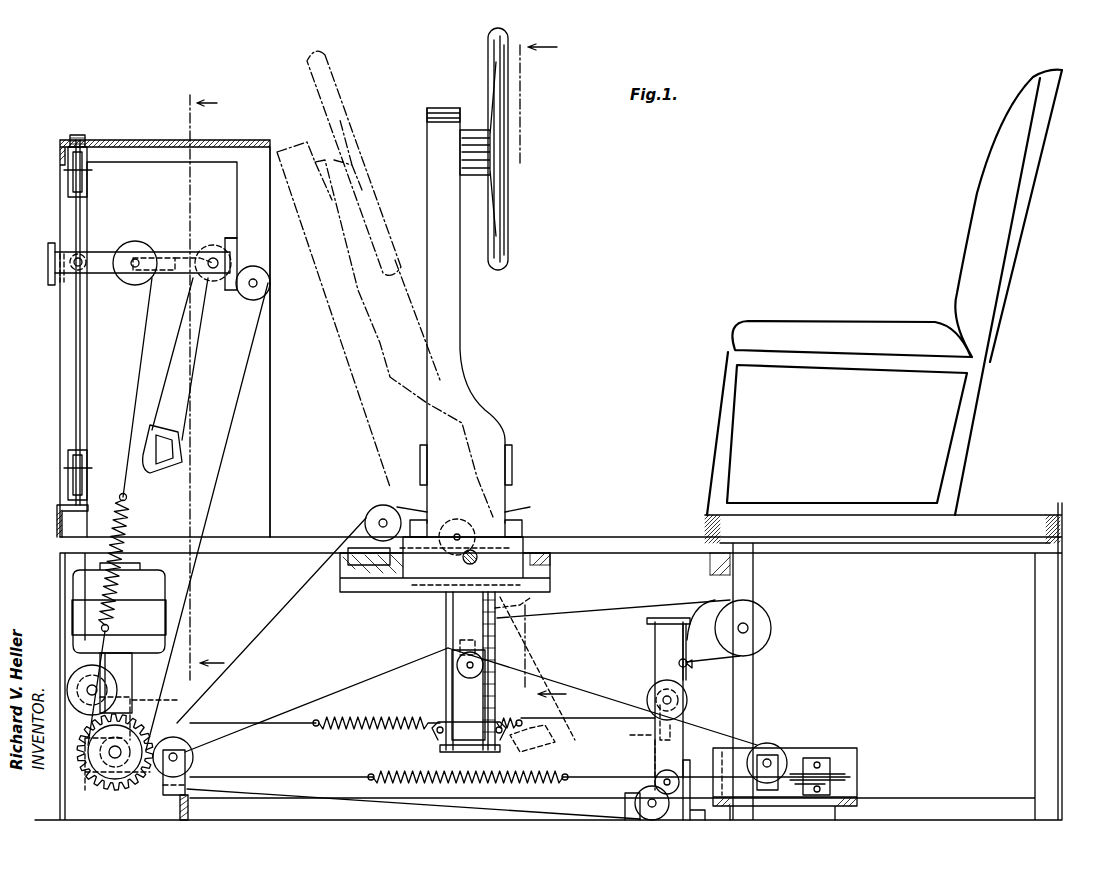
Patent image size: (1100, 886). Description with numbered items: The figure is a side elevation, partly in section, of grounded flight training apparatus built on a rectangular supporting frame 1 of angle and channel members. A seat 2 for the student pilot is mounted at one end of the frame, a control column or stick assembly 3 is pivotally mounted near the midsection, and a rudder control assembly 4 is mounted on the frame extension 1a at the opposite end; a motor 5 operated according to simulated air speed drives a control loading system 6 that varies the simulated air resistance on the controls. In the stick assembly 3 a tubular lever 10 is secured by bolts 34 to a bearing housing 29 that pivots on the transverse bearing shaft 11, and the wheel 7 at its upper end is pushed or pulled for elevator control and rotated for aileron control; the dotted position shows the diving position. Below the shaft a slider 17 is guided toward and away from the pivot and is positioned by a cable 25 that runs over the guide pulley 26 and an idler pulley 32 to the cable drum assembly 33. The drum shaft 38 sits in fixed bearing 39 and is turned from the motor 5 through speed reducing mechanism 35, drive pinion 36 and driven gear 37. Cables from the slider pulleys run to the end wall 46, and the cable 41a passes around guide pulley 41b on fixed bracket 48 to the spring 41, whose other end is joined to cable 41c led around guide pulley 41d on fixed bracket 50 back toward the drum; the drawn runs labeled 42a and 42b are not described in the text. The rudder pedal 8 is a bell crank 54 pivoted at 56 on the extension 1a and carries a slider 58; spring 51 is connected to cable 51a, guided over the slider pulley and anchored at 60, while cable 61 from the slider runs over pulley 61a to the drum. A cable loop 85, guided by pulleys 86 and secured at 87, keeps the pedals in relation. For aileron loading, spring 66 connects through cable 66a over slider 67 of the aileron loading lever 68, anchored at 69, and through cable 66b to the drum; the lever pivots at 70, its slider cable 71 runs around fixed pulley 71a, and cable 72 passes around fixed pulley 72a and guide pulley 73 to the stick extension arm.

The supporting frame 1 is at (60, 565).
The frame extension 1a is at (266, 395).
The seat 2 is at (1008, 322).
The control column or stick assembly 3 is at (348, 405).
The rudder control assembly 4 is at (117, 336).
The motor 5 is at (119, 608).
The control loading system 6 is at (230, 757).
The wheel 7 is at (338, 92).
The pedal 8 is at (165, 474).
The lever 10 is at (427, 157).
The transverse axis bearing shaft 11 is at (478, 555).
The shiftable structure or slider 17 is at (452, 680).
The cable 25 is at (276, 626).
The guide pulley 26 is at (456, 519).
The bearing housing 29 is at (398, 592).
The idler pulley 32 is at (372, 512).
The cable drum assembly 33 is at (115, 753).
The bolts 34 is at (410, 520).
The speed reducing mechanism 35 is at (128, 672).
The drive pinion 36 is at (75, 684).
The driven gear 37 is at (130, 703).
The shaft 38 is at (108, 752).
The fixed bearing 39 is at (130, 728).
The spring 41 is at (545, 770).
The cable 41a is at (364, 680).
The guide pulley 41b is at (192, 770).
The cable 41c is at (160, 790).
The guide pulley 41d is at (840, 772).
The cable 42a is at (586, 682).
The pulley 42b is at (778, 758).
The end wall 46 is at (438, 749).
The fixed bracket 48 is at (188, 802).
The fixed bracket 50 is at (830, 792).
The spring 51 is at (127, 517).
The cable 51a is at (116, 252).
The bell crank 54 is at (180, 336).
The pivot 56 is at (213, 258).
The slider 58 is at (137, 243).
The anchor 60 is at (48, 262).
The cable 61 is at (182, 256).
The pulley 61a is at (270, 284).
The aileron spring 66 is at (364, 717).
The cable 66a is at (580, 720).
The cable 66b is at (274, 723).
The slider 67 is at (688, 696).
The aileron loading lever 68 is at (655, 633).
The anchor 69 is at (682, 618).
The pivot 70 is at (675, 775).
The cable 71 is at (655, 738).
The fixed pulley 71a is at (636, 805).
The cable 72 is at (604, 611).
The fixed pulley 72a is at (772, 634).
The guide pulley 73 is at (500, 612).
The cable loop 85 is at (76, 218).
The pulleys 86 is at (68, 178).
The anchor 87 is at (55, 284).